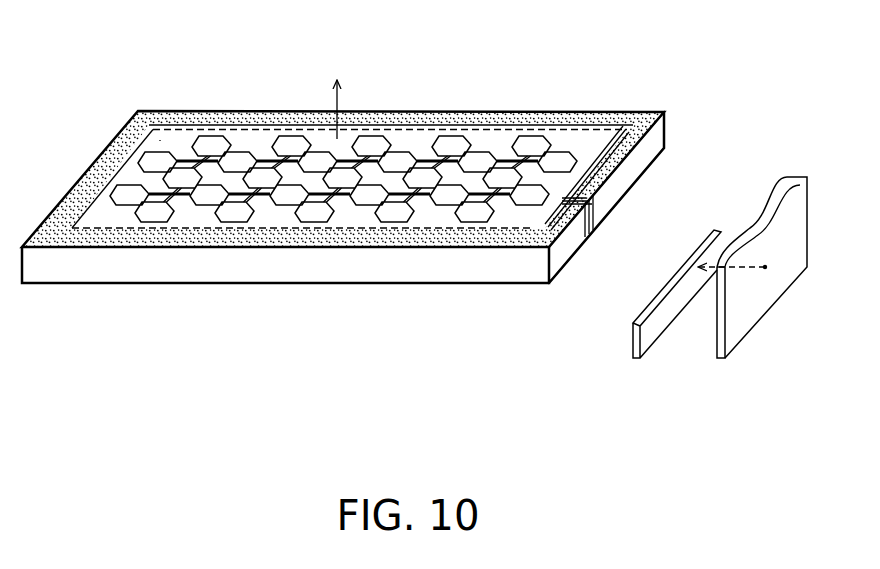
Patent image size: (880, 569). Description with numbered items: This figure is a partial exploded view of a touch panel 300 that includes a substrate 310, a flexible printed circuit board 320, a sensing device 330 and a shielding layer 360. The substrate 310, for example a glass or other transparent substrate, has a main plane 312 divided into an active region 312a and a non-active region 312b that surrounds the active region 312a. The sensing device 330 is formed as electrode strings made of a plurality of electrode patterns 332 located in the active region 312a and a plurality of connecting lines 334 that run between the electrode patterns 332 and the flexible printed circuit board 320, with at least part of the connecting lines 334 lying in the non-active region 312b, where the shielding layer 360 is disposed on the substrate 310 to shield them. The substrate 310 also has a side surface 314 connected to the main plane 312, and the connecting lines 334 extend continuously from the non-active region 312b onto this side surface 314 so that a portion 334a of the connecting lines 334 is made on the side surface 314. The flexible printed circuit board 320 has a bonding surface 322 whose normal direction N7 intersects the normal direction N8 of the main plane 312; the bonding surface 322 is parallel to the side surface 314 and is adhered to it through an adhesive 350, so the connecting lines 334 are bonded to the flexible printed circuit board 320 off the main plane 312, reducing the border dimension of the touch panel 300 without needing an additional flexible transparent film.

The touch panel 300 is at (762, 488).
The substrate 310 is at (455, 268).
The main plane 312 is at (162, 53).
The active region 312a is at (222, 129).
The non-active region 312b is at (183, 110).
The side surface 314 is at (556, 259).
The flexible printed circuit board 320 is at (743, 312).
The bonding surface 322 is at (714, 335).
The sensing device 330 is at (132, 178).
The electrode patterns 332 is at (298, 214).
The connecting lines 334 is at (320, 245).
The portion of the connecting lines 334a is at (585, 230).
The adhesive 350 is at (635, 342).
The shielding layer 360 is at (135, 133).
The normal direction of the bonding surface N7 is at (740, 251).
The normal direction of the main plane N8 is at (335, 89).